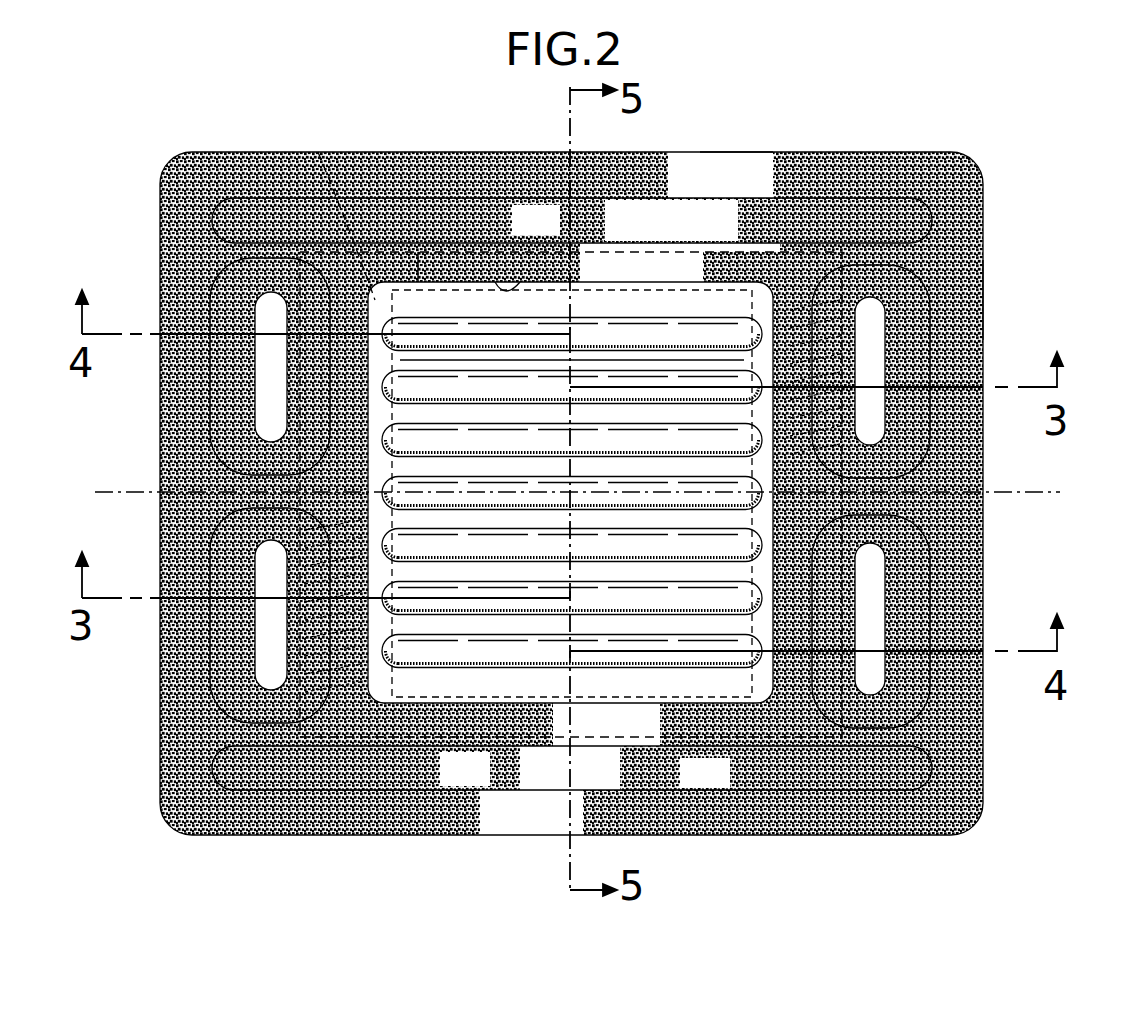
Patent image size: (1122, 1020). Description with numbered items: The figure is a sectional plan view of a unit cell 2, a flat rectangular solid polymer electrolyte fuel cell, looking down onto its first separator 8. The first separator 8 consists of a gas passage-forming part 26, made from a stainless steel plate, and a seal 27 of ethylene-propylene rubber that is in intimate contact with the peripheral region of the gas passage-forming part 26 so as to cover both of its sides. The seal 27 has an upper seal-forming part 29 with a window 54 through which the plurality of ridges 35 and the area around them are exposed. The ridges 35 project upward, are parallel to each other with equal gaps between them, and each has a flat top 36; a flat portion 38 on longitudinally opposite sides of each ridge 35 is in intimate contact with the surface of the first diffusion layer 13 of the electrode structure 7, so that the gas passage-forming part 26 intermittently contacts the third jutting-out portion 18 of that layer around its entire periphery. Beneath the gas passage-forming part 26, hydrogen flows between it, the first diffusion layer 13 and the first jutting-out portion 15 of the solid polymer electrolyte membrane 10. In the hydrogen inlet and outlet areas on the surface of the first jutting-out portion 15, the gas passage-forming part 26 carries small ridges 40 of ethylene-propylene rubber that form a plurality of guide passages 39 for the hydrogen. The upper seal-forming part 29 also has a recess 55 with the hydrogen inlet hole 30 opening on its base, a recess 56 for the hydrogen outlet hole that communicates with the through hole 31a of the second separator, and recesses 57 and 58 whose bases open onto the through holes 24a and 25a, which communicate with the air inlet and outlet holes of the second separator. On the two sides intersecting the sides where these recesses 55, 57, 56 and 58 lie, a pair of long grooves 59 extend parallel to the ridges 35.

The unit cell 2 is at (997, 193).
The first separator 8 is at (987, 255).
The seal 27 is at (970, 301).
The upper seal-forming part 29 is at (815, 165).
The long grooves 59 is at (218, 218).
The first jutting-out portion 15 is at (300, 252).
The recess 57 is at (222, 312).
The recess 55 is at (222, 592).
The recess 56 is at (915, 415).
The recess 58 is at (915, 645).
The through hole 24a is at (265, 392).
The hydrogen inlet hole 30 is at (265, 645).
The through hole 31a is at (877, 358).
The through hole 25a is at (880, 584).
The electrode structure 7 is at (485, 248).
The window 54 is at (527, 288).
The third jutting-out portion 18 is at (418, 290).
The first diffusion layer 13 is at (318, 152).
The guide passages 39 is at (770, 312).
The flat portion 38 is at (660, 418).
The flat top 36 is at (550, 655).
The ridges 35 is at (533, 620).
The gas passage-forming part 26 is at (667, 303).
The small ridges 40 is at (790, 250).
The solid polymer electrolyte membrane 10 is at (297, 485).